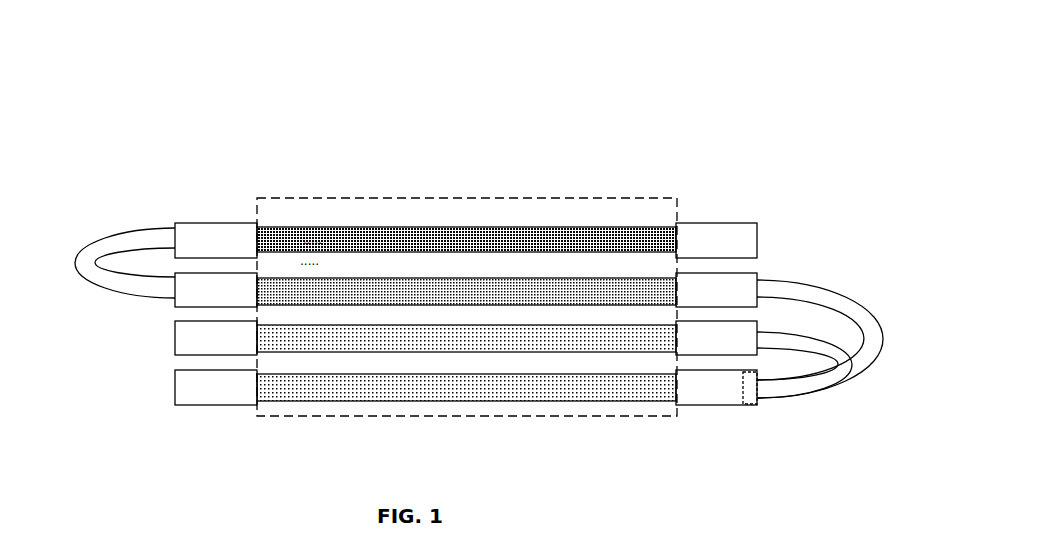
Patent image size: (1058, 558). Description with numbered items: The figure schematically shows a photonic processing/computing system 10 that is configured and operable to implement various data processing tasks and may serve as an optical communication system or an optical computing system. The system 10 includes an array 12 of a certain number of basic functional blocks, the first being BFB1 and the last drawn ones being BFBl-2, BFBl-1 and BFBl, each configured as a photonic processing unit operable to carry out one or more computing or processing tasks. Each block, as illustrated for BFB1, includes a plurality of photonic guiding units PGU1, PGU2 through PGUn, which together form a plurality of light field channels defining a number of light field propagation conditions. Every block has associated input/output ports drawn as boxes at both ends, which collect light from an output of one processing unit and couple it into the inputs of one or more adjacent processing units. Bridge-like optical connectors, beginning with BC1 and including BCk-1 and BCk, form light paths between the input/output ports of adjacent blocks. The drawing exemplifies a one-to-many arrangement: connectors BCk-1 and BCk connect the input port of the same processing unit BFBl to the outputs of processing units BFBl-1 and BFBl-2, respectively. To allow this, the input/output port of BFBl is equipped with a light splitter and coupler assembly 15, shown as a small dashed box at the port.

The photonic processing/computing system 10 is at (678, 94).
The array of basic functional blocks 12 is at (493, 185).
The light splitter and coupler assembly 15 is at (750, 398).
The optical connector BC1 is at (89, 232).
The optical connector BCk is at (814, 321).
The optical connector BCk-1 is at (880, 311).
The photonic guiding unit PGU1 is at (340, 232).
The photonic guiding unit PGU2 is at (295, 232).
The photonic guiding unit PGUn is at (360, 250).
The basic functional block BFB1 is at (575, 227).
The basic functional block BFBl-2 is at (628, 278).
The basic functional block BFBl-1 is at (523, 348).
The basic functional block BFBl is at (644, 392).